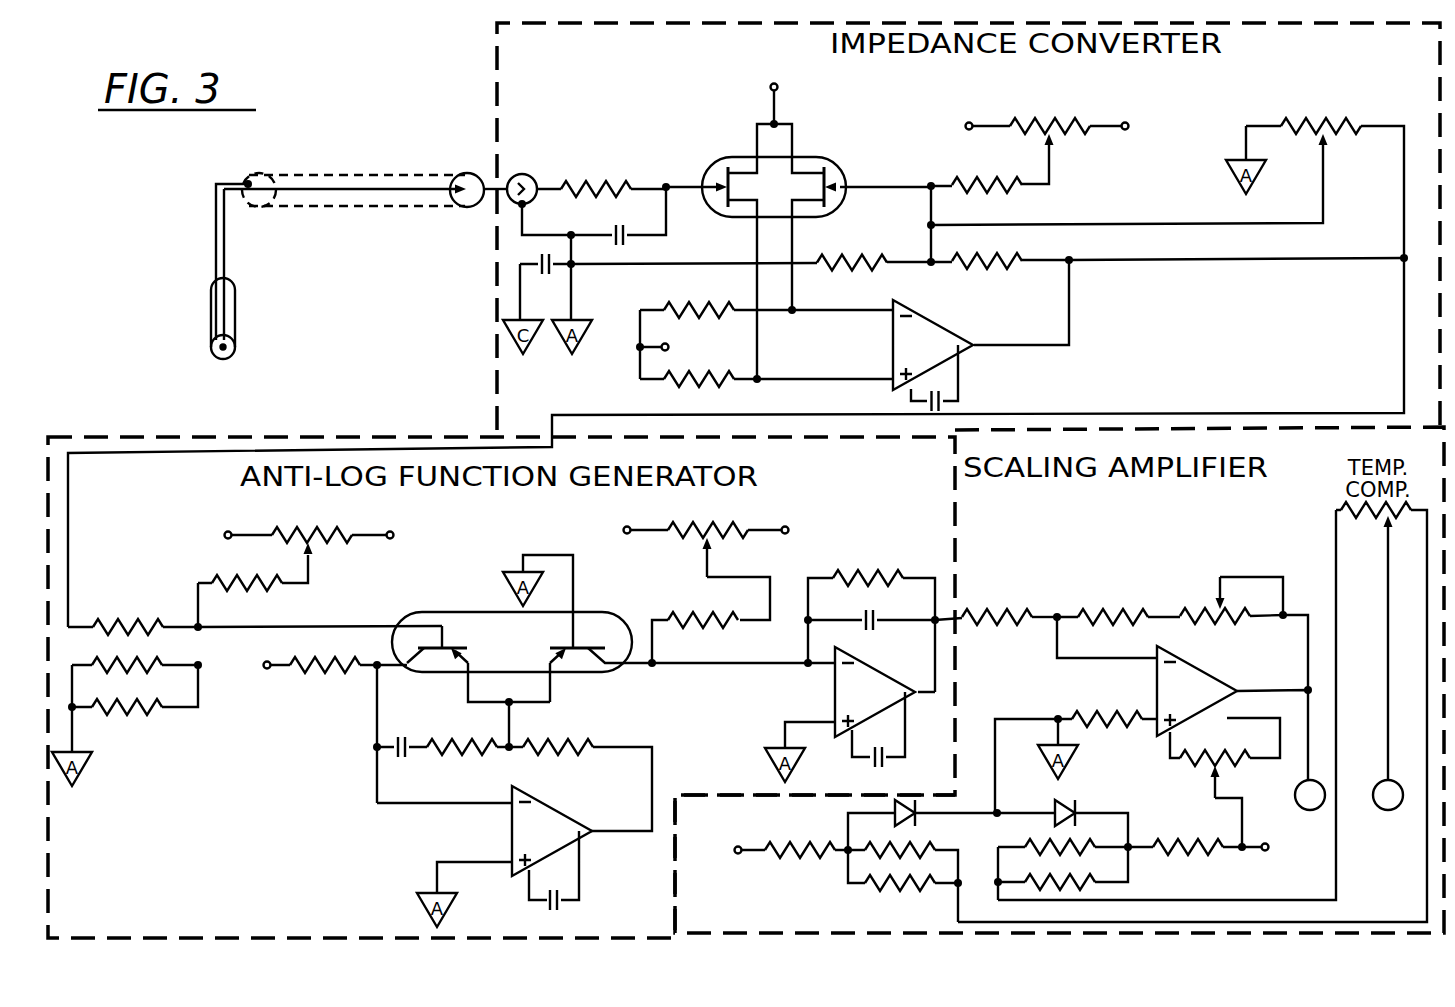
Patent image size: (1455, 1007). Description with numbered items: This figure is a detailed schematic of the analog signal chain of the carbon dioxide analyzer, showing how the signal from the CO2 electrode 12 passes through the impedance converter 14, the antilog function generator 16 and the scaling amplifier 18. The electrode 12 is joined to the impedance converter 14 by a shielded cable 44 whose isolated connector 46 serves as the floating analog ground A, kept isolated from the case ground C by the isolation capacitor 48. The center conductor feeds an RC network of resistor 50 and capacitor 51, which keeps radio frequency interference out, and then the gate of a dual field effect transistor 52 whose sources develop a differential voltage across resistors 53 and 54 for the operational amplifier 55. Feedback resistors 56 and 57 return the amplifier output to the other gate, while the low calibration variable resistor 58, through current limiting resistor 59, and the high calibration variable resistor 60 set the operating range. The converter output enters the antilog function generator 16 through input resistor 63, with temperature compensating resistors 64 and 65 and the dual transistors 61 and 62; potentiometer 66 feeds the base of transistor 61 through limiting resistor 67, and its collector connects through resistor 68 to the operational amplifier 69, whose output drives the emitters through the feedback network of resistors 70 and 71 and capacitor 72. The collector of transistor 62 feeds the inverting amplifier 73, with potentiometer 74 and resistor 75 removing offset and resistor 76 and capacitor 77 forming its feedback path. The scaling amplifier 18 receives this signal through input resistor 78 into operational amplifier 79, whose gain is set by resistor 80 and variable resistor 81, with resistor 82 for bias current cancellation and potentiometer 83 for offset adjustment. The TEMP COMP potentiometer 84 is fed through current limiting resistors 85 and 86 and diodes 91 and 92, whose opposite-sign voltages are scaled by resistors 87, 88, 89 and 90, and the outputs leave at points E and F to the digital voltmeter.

The CO2 electrode 12 is at (236, 313).
The shielded cable 44 is at (364, 174).
The connector 46 is at (489, 172).
The impedance converter 14 is at (1234, 355).
The antilog function generator 16 is at (864, 488).
The scaling amplifier 18 is at (1123, 533).
The isolation capacitor 48 is at (540, 261).
The resistor 50 is at (600, 183).
The capacitor 51 is at (626, 229).
The dual field effect transistor 52 is at (813, 158).
The resistor 53 is at (697, 303).
The resistor 54 is at (688, 386).
The operational amplifier 55 is at (930, 319).
The resistor 56 is at (993, 250).
The resistor 57 is at (858, 252).
The variable resistor 58 is at (1074, 127).
The resistor 59 is at (991, 178).
The variable resistor 60 is at (1354, 127).
The transistor 61 is at (450, 647).
The transistor 62 is at (587, 647).
The input resistor 63 is at (133, 618).
The temperature compensating resistor 64 is at (124, 660).
The temperature compensating resistor 65 is at (124, 703).
The potentiometer 66 is at (320, 522).
The limiting resistor 67 is at (252, 570).
The resistor 68 is at (319, 679).
The operational amplifier 69 is at (545, 803).
The resistor 70 is at (552, 738).
The resistor 71 is at (456, 738).
The capacitor 72 is at (396, 737).
The inverting amplifier 73 is at (870, 665).
The potentiometer 74 is at (711, 522).
The resistor 75 is at (707, 607).
The resistor 76 is at (873, 572).
The capacitor 77 is at (880, 616).
The input resistor 78 is at (1003, 608).
The operational amplifier 79 is at (1205, 665).
The resistor 80 is at (1111, 608).
The variable resistor 81 is at (1194, 608).
The resistor 82 is at (1106, 712).
The potentiometer 83 is at (1211, 752).
The potentiometer 84 is at (1363, 518).
The resistor 85 is at (795, 841).
The resistor 86 is at (1190, 840).
The resistor 87 is at (908, 845).
The resistor 88 is at (900, 892).
The resistor 89 is at (1070, 842).
The resistor 90 is at (1078, 879).
The diode 91 is at (895, 818).
The diode 92 is at (1065, 805).